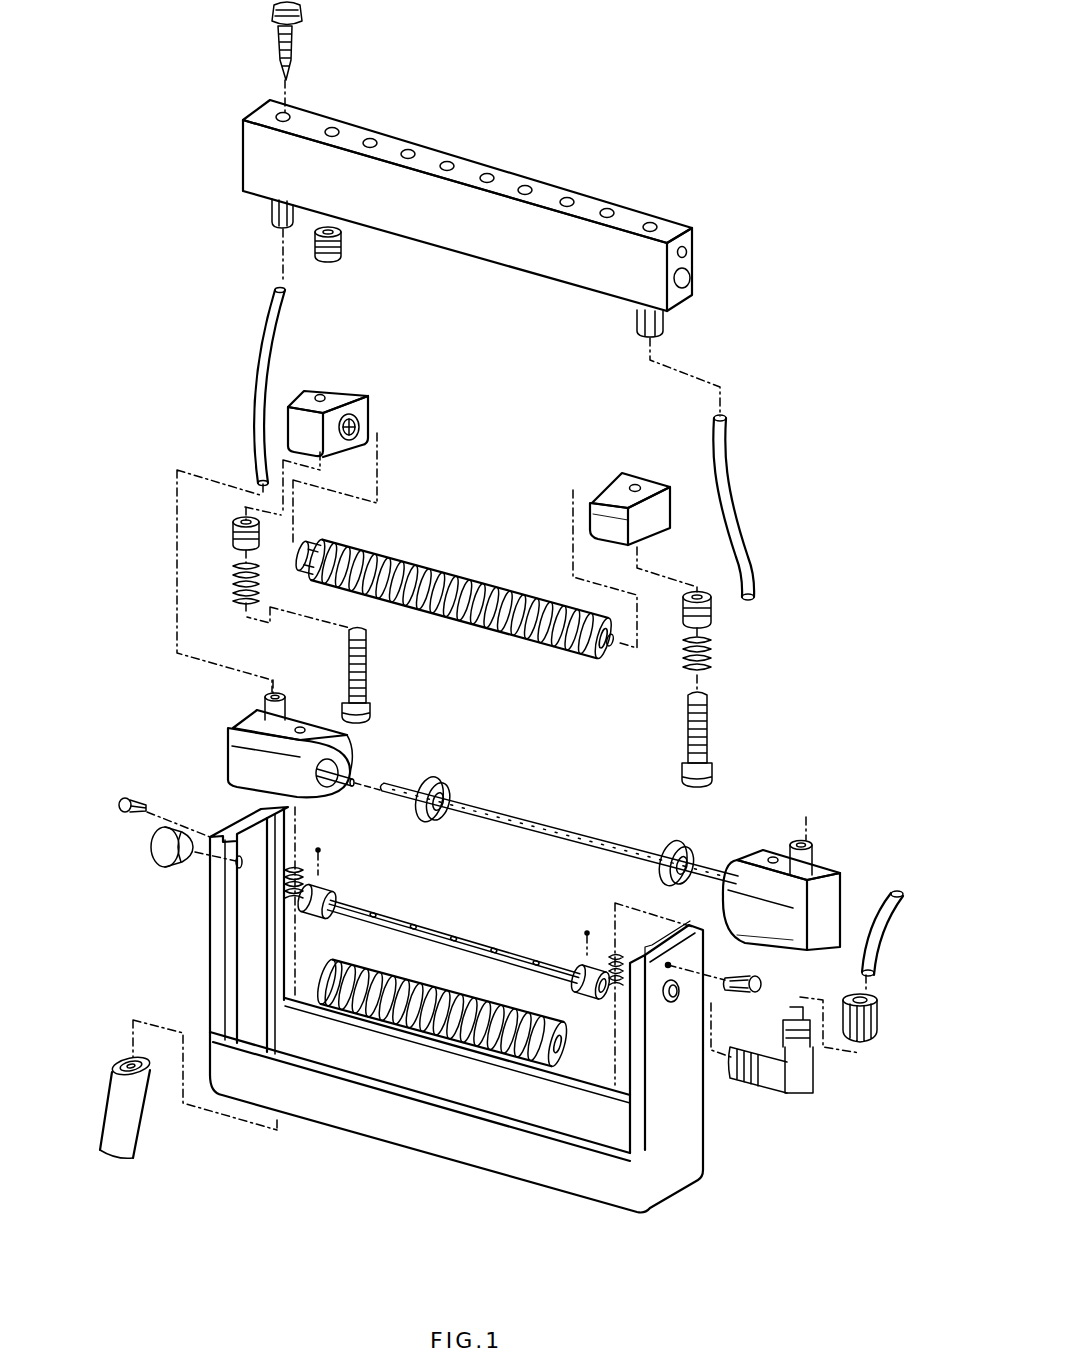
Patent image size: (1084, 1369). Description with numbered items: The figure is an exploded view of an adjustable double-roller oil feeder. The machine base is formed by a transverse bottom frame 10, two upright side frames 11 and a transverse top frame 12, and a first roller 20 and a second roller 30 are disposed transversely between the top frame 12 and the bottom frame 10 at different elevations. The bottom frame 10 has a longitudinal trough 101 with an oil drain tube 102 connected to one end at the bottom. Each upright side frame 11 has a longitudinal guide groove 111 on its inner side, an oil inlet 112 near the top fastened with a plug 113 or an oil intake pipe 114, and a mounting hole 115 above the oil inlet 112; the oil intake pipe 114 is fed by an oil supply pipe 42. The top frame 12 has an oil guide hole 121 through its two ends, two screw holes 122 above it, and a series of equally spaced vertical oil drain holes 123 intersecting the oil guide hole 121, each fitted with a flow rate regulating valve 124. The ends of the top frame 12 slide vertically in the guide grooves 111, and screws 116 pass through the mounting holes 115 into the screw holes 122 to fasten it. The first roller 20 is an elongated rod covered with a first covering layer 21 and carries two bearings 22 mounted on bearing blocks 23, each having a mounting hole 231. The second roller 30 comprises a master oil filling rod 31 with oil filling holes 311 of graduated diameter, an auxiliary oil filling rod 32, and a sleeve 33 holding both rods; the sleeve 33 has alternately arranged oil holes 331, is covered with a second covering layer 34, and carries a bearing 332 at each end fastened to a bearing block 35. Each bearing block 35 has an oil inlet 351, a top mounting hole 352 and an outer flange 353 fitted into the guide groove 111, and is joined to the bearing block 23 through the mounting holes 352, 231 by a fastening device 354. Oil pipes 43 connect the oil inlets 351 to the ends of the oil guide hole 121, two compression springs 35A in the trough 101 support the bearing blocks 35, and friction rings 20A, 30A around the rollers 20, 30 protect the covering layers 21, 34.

The transverse bottom frame 10 is at (510, 1017).
The upright side frames 11 is at (457, 977).
The longitudinal trough 101 is at (383, 1072).
The oil drain tube 102 is at (152, 1118).
The longitudinal guide groove 111 is at (248, 830).
The oil inlet 112 is at (237, 863).
The plug 113 is at (148, 866).
The oil intake pipe 114 is at (822, 1063).
The mounting hole 115 is at (665, 962).
The screws 116 is at (761, 986).
The transverse top frame 12 is at (630, 216).
The oil guide hole 121 is at (691, 279).
The screw holes 122 is at (687, 252).
The oil drain holes 123 is at (449, 162).
The flow rate regulating valve 124 is at (306, 24).
The first roller 20 is at (455, 600).
The friction rings 20A is at (396, 559).
The first covering layer 21 is at (506, 594).
The bearings 22 is at (314, 538).
The bearing block 23 is at (360, 414).
The mounting hole 231 is at (322, 393).
The second roller 30 is at (531, 869).
The friction rings 30A is at (356, 964).
The master oil filling rod 31 is at (499, 807).
The oil filling holes 311 is at (520, 836).
The auxiliary oil filling rod 32 is at (352, 773).
The sleeve 33 is at (483, 935).
The oil holes 331 is at (373, 916).
The bearing 332 is at (432, 770).
The second covering layer 34 is at (418, 985).
The bearing block 35 is at (531, 810).
The compression springs 35A is at (301, 856).
The oil inlet 351 is at (262, 701).
The top mounting hole 352 is at (300, 726).
The outer flange 353 is at (236, 736).
The fastening device 354 is at (366, 672).
The oil supply pipe 42 is at (883, 929).
The oil pipes 43 is at (246, 378).